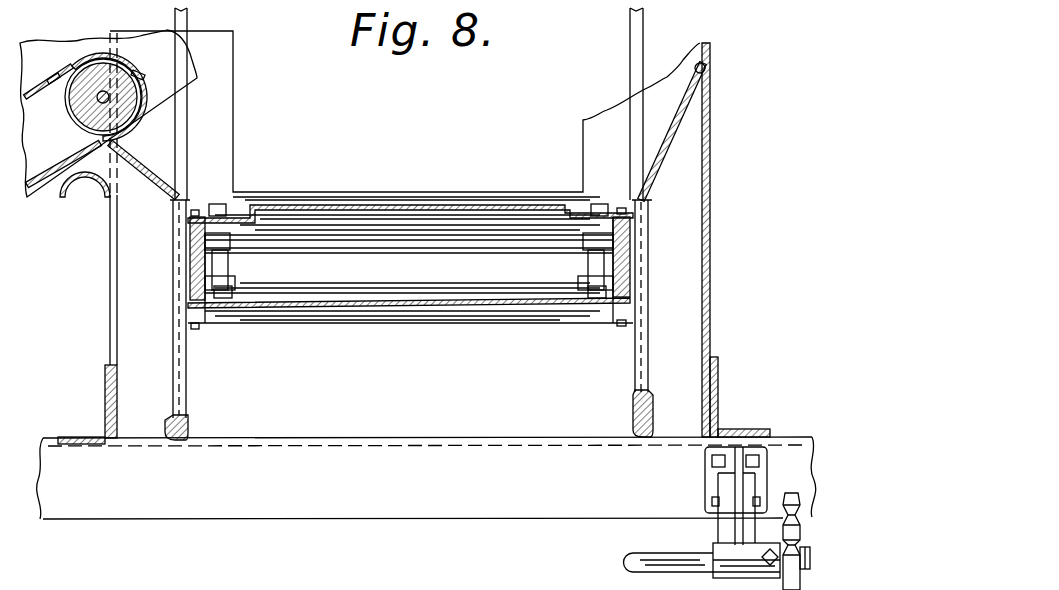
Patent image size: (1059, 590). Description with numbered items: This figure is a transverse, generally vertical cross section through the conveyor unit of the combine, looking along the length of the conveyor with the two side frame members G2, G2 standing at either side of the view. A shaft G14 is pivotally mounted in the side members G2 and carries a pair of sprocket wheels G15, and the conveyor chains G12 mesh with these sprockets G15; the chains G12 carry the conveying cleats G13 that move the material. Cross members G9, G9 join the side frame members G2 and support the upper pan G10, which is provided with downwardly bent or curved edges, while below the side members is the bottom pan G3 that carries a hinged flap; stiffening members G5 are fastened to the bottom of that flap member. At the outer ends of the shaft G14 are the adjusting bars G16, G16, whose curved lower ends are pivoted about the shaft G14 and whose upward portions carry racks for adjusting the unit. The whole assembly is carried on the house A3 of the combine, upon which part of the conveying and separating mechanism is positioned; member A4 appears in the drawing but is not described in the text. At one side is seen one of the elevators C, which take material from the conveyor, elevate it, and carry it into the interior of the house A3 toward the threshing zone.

The elevator C is at (38, 93).
The house A3 is at (110, 318).
The bracket A4 is at (185, 372).
The adjusting bar G16 is at (188, 130).
The side frame member G2 is at (193, 282).
The bottom pan G3 is at (445, 300).
The stiffening member G5 is at (388, 316).
The cross member G9 is at (452, 222).
The upper pan G10 is at (384, 204).
The conveyor chain G12 is at (220, 204).
The conveying cleat G13 is at (338, 200).
The shaft G14 is at (355, 252).
The sprocket wheel G15 is at (232, 268).